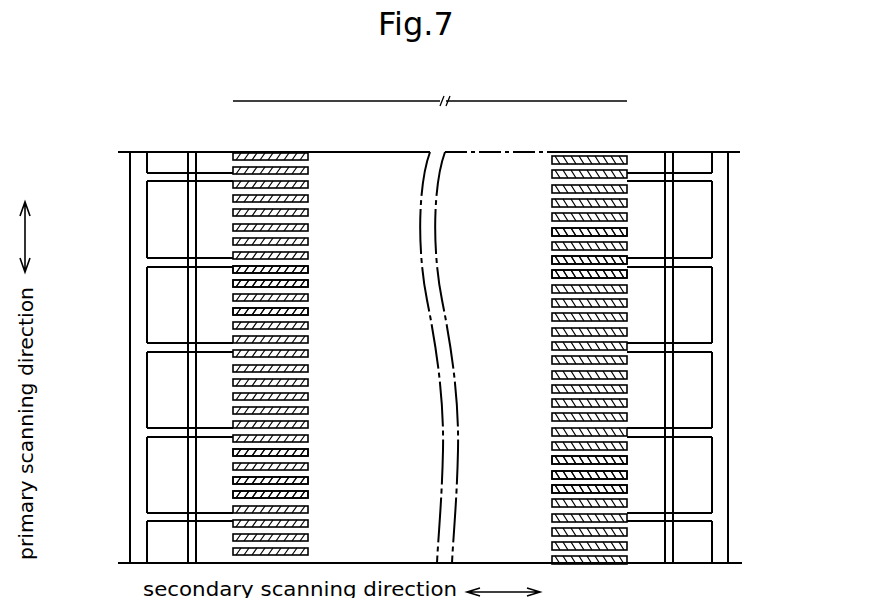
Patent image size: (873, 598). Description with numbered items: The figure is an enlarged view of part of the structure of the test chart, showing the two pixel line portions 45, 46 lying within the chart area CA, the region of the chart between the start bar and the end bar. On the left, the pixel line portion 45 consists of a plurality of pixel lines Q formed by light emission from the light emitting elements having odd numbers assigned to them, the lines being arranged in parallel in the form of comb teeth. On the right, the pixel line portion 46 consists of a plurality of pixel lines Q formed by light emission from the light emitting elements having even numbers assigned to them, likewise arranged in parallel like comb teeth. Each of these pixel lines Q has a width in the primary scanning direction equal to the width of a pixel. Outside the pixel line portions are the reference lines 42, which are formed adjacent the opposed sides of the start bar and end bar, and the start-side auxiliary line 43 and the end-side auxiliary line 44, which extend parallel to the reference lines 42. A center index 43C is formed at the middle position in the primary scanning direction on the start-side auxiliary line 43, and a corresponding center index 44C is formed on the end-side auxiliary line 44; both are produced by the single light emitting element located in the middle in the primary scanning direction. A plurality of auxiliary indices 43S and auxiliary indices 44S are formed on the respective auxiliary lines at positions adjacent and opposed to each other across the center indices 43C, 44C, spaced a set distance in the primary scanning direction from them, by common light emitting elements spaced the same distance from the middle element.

The reference lines 42 is at (130, 167).
The start-side auxiliary line 43 is at (188, 397).
The auxiliary indices 43S is at (233, 178).
The center index 43C is at (233, 349).
The end-side auxiliary line 44 is at (675, 388).
The auxiliary indices 44S is at (645, 257).
The center index 44C is at (645, 343).
The pixel line portion 45 is at (308, 152).
The pixel line portion 46 is at (627, 152).
The pixel lines Q is at (308, 308).
The chart area CA is at (430, 88).